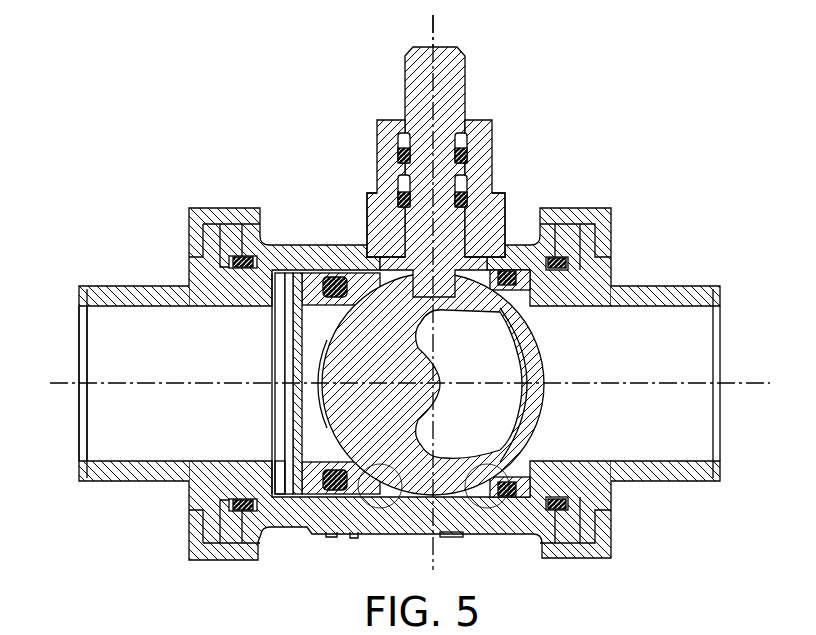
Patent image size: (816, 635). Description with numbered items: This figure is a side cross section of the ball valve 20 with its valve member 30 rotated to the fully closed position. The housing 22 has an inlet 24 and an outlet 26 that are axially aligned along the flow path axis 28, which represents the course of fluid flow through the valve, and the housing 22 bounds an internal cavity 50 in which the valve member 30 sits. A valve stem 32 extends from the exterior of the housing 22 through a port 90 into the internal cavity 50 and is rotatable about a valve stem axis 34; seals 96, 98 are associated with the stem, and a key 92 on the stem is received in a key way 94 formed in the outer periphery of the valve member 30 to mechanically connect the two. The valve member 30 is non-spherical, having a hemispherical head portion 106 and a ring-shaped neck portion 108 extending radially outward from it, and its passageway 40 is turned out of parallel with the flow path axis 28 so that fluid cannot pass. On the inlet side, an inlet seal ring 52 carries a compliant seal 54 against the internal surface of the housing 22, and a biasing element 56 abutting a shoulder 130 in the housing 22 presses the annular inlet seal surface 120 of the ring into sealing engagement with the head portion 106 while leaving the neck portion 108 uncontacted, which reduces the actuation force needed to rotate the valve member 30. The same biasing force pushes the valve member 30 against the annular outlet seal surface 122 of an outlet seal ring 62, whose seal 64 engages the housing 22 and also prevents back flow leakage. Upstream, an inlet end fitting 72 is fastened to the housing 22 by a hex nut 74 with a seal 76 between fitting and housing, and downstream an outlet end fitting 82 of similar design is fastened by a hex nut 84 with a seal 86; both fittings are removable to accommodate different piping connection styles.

The ball valve 20 is at (632, 146).
The housing 22 is at (366, 246).
The inlet 24 is at (110, 411).
The outlet 26 is at (688, 345).
The flow path axis 28 is at (62, 382).
The valve member 30 is at (546, 342).
The valve stem 32 is at (455, 75).
The valve stem axis 34 is at (438, 40).
The passageway 40 is at (495, 364).
The internal cavity 50 is at (323, 344).
The inlet seal ring 52 is at (378, 212).
The compliant seal 54 is at (333, 277).
The biasing element 56 is at (297, 272).
The outlet seal ring 62 is at (522, 470).
The seal 64 is at (508, 492).
The inlet end fitting 72 is at (96, 286).
The hex nut 74 is at (190, 214).
The seal 76 is at (240, 256).
The outlet end fitting 82 is at (600, 272).
The hex nut 84 is at (582, 222).
The seal 86 is at (556, 250).
The port 90 is at (490, 137).
The key 92 is at (505, 247).
The key way 94 is at (278, 324).
The seal 96 is at (403, 150).
The seal 98 is at (470, 196).
The hemispherical head portion 106 is at (322, 420).
The ring-shaped neck portion 108 is at (541, 402).
The annular inlet seal surface 120 is at (395, 494).
The annular outlet seal surface 122 is at (470, 494).
The shoulder 130 is at (281, 480).